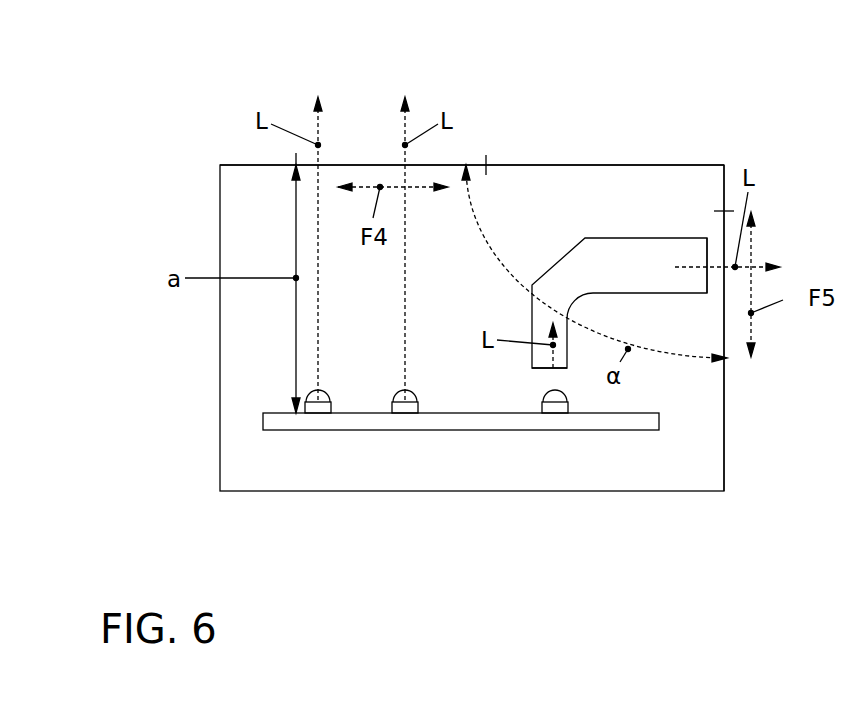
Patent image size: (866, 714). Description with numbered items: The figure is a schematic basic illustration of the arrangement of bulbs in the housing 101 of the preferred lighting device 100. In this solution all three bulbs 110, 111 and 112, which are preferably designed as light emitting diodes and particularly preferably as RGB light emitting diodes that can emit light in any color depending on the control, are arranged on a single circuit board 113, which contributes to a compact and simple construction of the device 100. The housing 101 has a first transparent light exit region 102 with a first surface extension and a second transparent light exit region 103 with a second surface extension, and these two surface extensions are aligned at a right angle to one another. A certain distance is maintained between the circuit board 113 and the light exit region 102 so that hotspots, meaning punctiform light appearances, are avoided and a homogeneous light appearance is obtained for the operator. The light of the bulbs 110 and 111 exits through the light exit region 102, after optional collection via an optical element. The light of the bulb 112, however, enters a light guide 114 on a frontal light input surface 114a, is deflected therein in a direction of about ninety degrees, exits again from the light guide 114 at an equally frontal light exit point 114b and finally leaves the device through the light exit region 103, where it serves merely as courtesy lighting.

The device 100 is at (735, 100).
The housing 101 is at (693, 493).
The first transparent light exit region 102 is at (364, 167).
The second transparent light exit region 103 is at (724, 307).
The bulb 110 is at (318, 400).
The bulb 111 is at (405, 400).
The bulb 112 is at (555, 400).
The single circuit board 113 is at (352, 421).
The light guide 114 is at (585, 238).
The frontal light input surface 114a is at (537, 369).
The frontal light exit point 114b is at (707, 250).